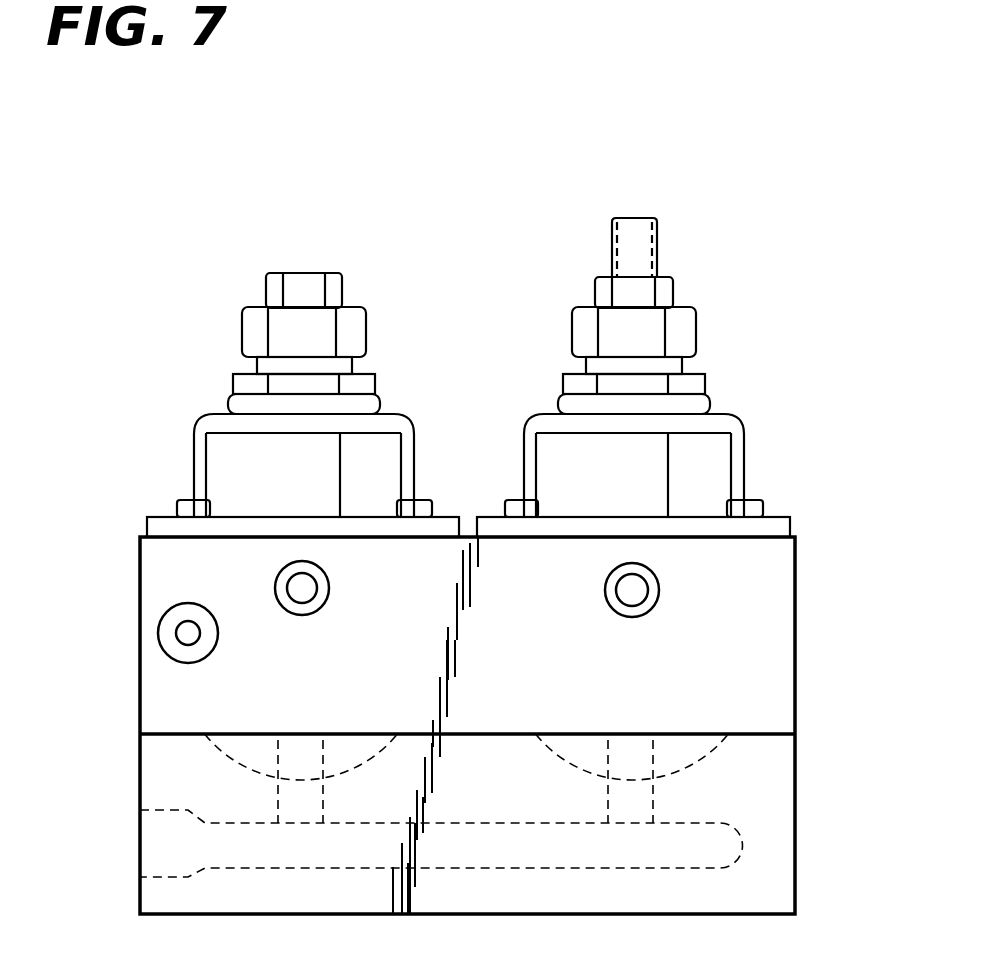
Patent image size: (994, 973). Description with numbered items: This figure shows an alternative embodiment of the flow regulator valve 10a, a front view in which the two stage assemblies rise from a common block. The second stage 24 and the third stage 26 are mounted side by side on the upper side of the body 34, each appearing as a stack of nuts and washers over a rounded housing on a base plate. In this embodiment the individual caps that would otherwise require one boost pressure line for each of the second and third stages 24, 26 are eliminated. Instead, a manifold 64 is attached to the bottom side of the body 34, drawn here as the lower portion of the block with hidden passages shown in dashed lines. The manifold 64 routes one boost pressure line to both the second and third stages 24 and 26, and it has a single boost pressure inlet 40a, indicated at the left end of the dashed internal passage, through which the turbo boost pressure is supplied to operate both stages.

The flow regulator valve 10a is at (827, 538).
The second stage 24 is at (797, 145).
The third stage 26 is at (463, 198).
The body 34 is at (140, 628).
The manifold 64 is at (140, 770).
The single boost pressure inlet 40a is at (163, 846).